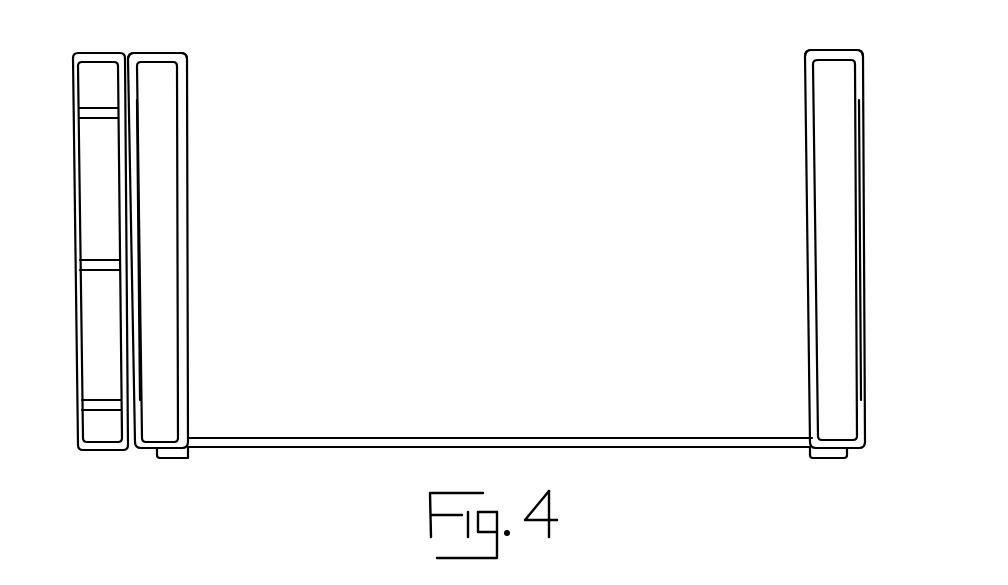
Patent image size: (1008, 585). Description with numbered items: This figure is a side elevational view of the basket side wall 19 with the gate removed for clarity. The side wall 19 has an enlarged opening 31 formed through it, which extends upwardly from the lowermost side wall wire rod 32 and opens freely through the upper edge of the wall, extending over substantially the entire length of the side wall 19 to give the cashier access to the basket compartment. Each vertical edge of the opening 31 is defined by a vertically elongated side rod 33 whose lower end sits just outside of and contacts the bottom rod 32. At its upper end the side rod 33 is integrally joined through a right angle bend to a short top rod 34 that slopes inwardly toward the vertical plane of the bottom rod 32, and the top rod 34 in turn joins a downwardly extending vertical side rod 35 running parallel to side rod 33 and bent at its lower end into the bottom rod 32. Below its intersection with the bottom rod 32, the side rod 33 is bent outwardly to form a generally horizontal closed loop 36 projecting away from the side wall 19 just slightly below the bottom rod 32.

The basket side wall 19 is at (70, 188).
The enlarged opening 31 is at (612, 118).
The lowermost side wall wire rod 32 is at (710, 446).
The side rod 33 is at (184, 226).
The short top rod 34 is at (153, 56).
The vertical side rod 35 is at (136, 332).
The closed loop 36 is at (176, 459).